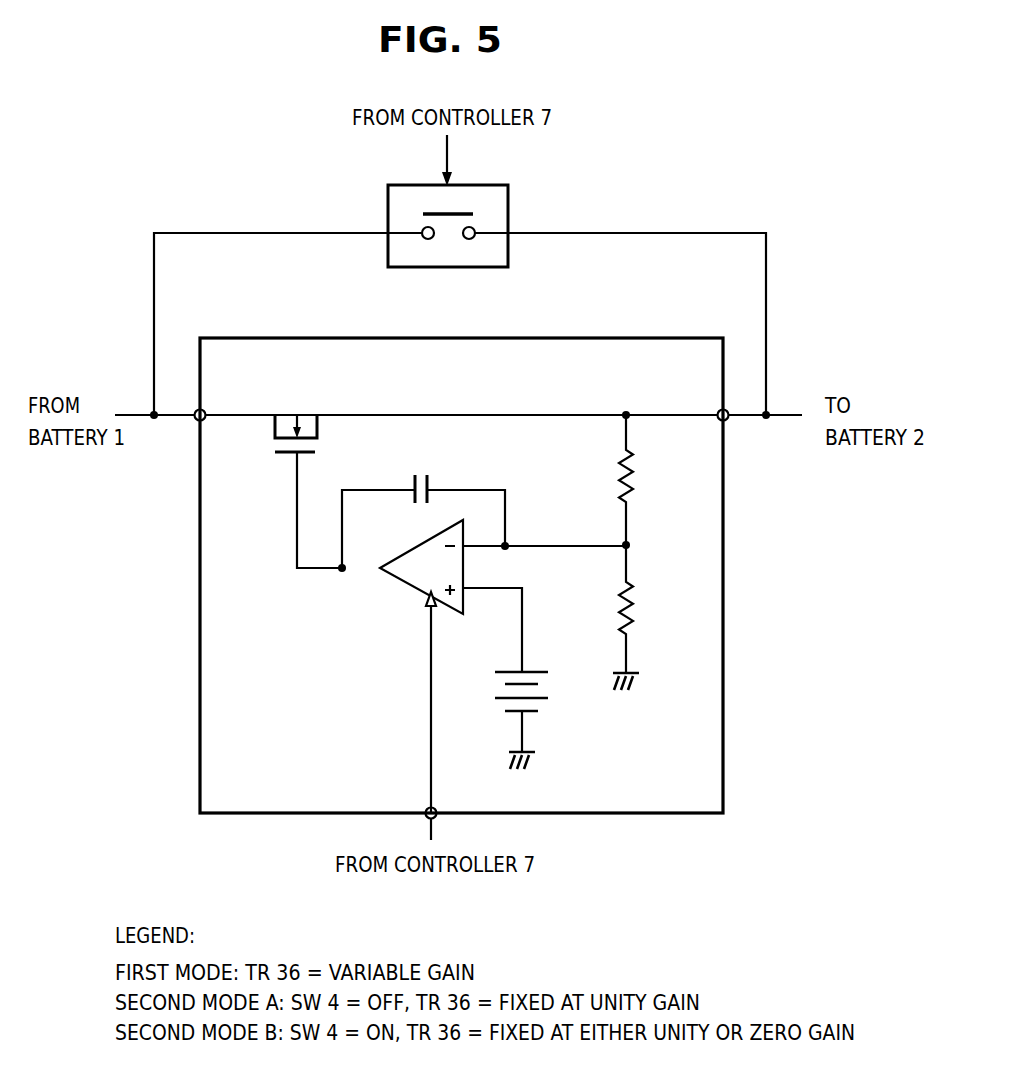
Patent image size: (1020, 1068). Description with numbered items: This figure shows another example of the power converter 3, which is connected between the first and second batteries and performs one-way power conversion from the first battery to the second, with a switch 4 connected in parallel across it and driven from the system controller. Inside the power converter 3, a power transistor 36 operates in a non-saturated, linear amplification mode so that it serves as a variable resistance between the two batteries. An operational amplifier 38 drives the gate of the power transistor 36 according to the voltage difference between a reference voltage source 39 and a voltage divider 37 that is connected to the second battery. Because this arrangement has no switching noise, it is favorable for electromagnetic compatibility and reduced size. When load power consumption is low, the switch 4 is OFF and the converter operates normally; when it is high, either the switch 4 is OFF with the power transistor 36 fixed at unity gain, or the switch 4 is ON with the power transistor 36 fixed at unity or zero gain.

The power converter 3 is at (447, 338).
The switch 4 is at (478, 185).
The power transistor 36 is at (280, 453).
The voltage divider 37 is at (636, 547).
The operational amplifier 38 is at (402, 588).
The reference voltage source 39 is at (533, 672).